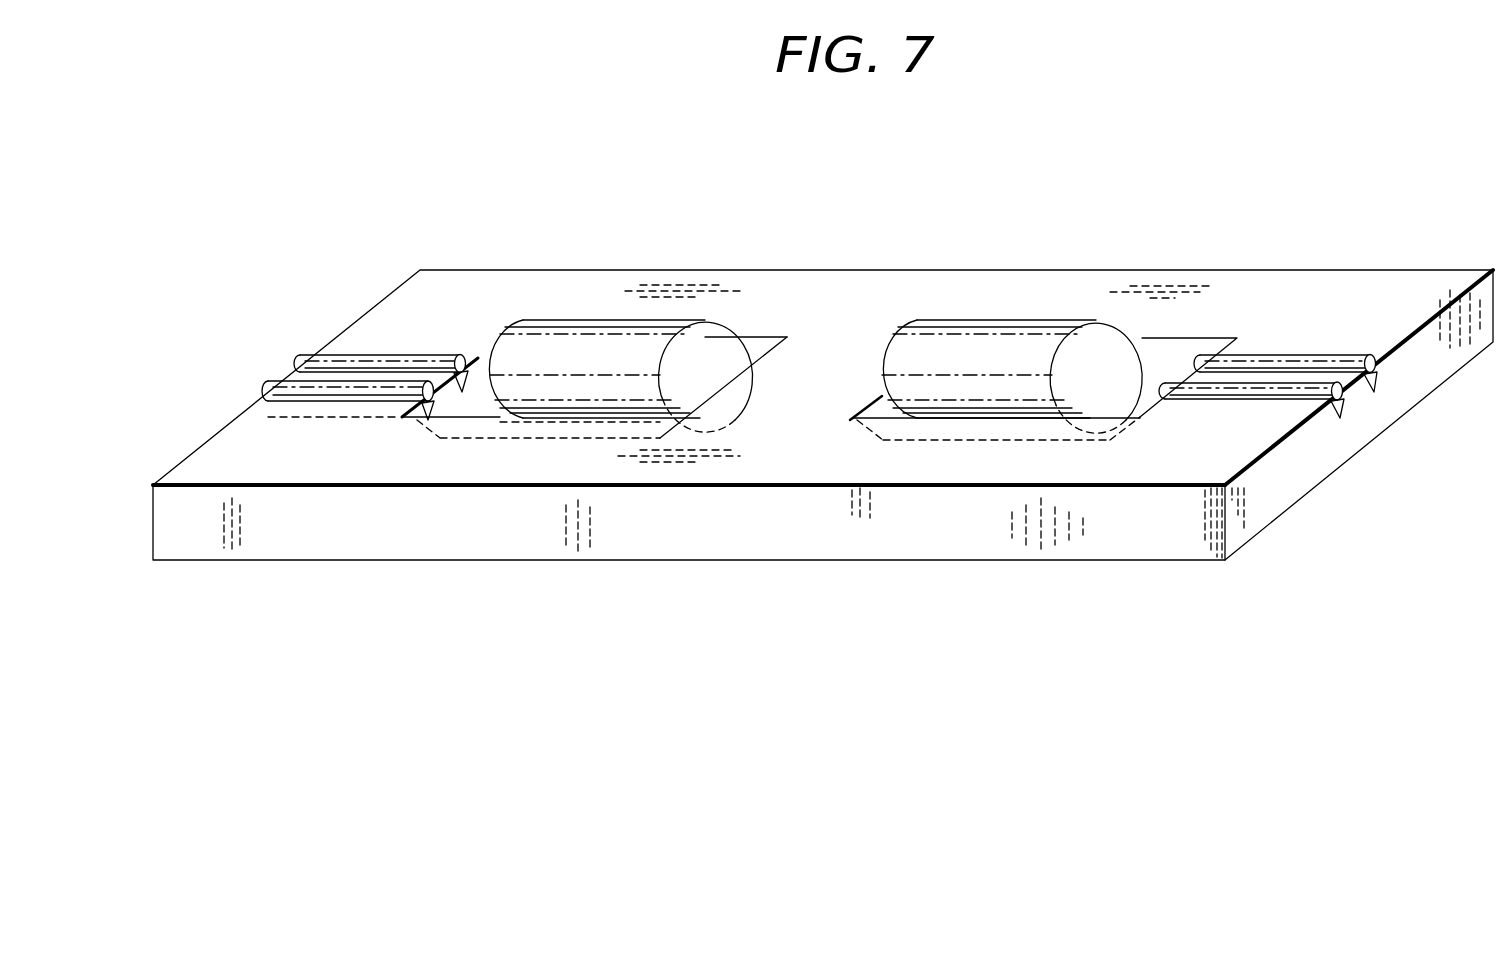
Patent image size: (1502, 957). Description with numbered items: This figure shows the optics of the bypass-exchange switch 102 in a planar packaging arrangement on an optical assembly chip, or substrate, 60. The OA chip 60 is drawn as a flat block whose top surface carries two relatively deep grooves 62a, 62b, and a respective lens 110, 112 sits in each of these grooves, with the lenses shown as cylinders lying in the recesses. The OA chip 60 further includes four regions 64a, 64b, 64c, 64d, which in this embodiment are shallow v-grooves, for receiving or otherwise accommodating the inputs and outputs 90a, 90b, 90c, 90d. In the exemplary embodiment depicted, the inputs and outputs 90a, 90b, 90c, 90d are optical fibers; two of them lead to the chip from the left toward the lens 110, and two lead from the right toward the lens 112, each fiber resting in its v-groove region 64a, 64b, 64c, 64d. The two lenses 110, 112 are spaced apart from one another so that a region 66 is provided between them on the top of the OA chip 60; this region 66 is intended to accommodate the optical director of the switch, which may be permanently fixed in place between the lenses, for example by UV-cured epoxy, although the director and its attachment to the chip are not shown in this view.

The optical assembly chip 60 is at (515, 475).
The deep groove 62a is at (470, 411).
The deep groove 62b is at (853, 419).
The region 64a is at (473, 367).
The region 64b is at (425, 410).
The region 64c is at (1377, 383).
The region 64d is at (1338, 412).
The region 66 is at (823, 382).
The input or output 90a is at (403, 366).
The input or output 90b is at (1233, 394).
The input or output 90c is at (1293, 360).
The input or output 90d is at (333, 389).
The bypass-exchange switch 102 is at (912, 238).
The lens 110 is at (598, 380).
The lens 112 is at (993, 382).